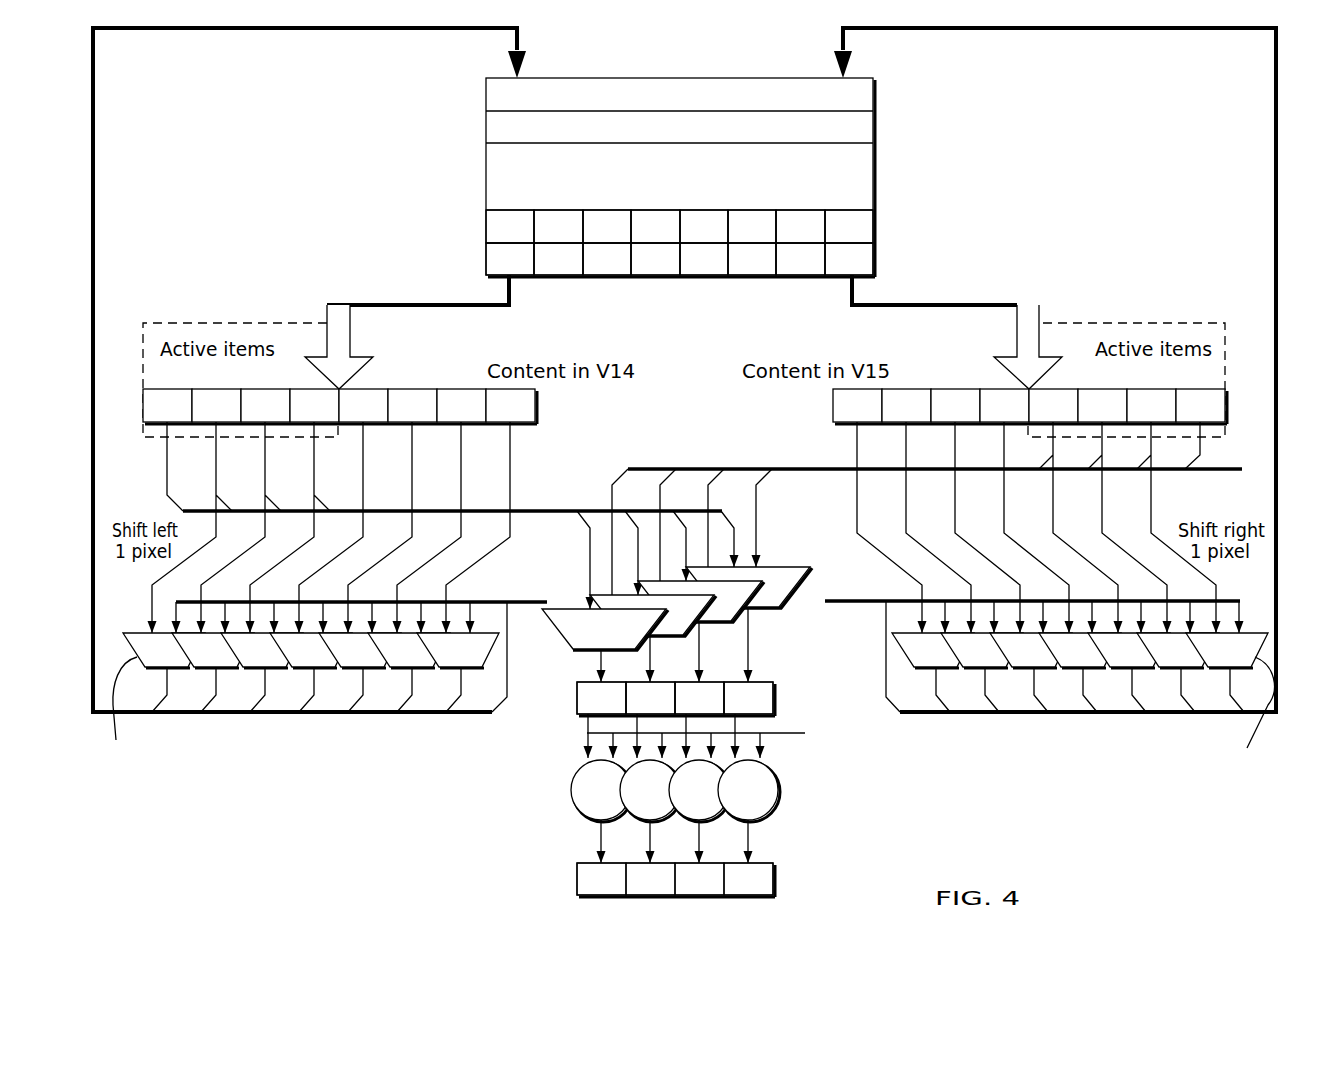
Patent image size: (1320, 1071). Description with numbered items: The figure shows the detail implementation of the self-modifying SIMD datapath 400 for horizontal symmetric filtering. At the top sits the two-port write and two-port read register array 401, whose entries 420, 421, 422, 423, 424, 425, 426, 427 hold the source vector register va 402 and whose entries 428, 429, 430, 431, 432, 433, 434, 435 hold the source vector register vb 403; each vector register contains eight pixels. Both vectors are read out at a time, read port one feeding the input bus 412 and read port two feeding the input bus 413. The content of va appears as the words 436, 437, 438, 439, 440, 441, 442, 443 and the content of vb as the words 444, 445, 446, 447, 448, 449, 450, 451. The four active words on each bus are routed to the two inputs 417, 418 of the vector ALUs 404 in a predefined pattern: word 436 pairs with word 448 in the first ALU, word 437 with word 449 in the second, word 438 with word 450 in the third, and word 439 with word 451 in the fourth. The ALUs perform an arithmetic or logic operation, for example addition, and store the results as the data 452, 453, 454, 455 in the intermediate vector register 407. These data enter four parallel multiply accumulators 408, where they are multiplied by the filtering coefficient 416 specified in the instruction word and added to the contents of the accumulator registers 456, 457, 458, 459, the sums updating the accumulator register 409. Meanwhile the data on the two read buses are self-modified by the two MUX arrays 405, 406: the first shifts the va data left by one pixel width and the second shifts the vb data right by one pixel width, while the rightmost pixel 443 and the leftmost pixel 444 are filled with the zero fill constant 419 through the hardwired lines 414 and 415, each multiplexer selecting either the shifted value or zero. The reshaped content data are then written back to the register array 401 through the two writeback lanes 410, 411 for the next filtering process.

The detail implementation of the convolution unit 400 is at (684, 370).
The register array 401 is at (630, 177).
The vector register va 402 is at (420, 222).
The vector register vb 403 is at (416, 254).
The vector arithmetic logic units 404 is at (703, 630).
The multiplex array 405 is at (124, 633).
The multiplex array 406 is at (1262, 632).
The intermediate vector register 407 is at (642, 720).
The multiply accumulator 408 is at (572, 785).
The accumulator register 409 is at (602, 880).
The writeback lane 410 is at (150, 132).
The writeback lane 411 is at (1240, 138).
The input bus 412 is at (350, 327).
The input bus 413 is at (1017, 328).
The hardwired line 414 is at (507, 665).
The hardwired line 415 is at (886, 685).
The filtering coefficient 416 is at (791, 750).
The vector ALU input 417 is at (553, 510).
The vector ALU input 418 is at (835, 468).
The fill all zero constant 0x0000 419 is at (518, 559).
The register file entry 420 is at (510, 226).
The register file entry 421 is at (558, 226).
The register file entry 422 is at (607, 226).
The register file entry 423 is at (655, 226).
The register file entry 424 is at (704, 226).
The register file entry 425 is at (752, 226).
The register file entry 426 is at (800, 226).
The register file entry 427 is at (849, 226).
The register file entry 428 is at (510, 259).
The register file entry 429 is at (558, 259).
The register file entry 430 is at (607, 259).
The register file entry 431 is at (655, 259).
The register file entry 432 is at (704, 259).
The register file entry 433 is at (752, 259).
The register file entry 434 is at (800, 259).
The register file entry 435 is at (849, 259).
The word 436 is at (167, 450).
The word 437 is at (195, 511).
The word 438 is at (244, 511).
The word 439 is at (293, 511).
The content item of V14 440 is at (342, 511).
The content item of V14 441 is at (391, 511).
The content item of V14 442 is at (440, 511).
The rightmost pixel 443 is at (489, 511).
The leftmost pixel 444 is at (880, 511).
The content item of V15 445 is at (929, 511).
The content item of V15 446 is at (978, 511).
The content item of V15 447 is at (1027, 511).
The word 448 is at (1076, 511).
The word 449 is at (1125, 511).
The word 450 is at (1174, 511).
The word 451 is at (1200, 429).
The intermediate register data 452 is at (601, 698).
The intermediate register data 453 is at (650, 698).
The intermediate register data 454 is at (699, 698).
The ALU result register entry 455 is at (748, 698).
The accumulator register 456 is at (601, 879).
The accumulator register 457 is at (650, 879).
The accumulator register 458 is at (699, 879).
The accumulator register 459 is at (748, 879).